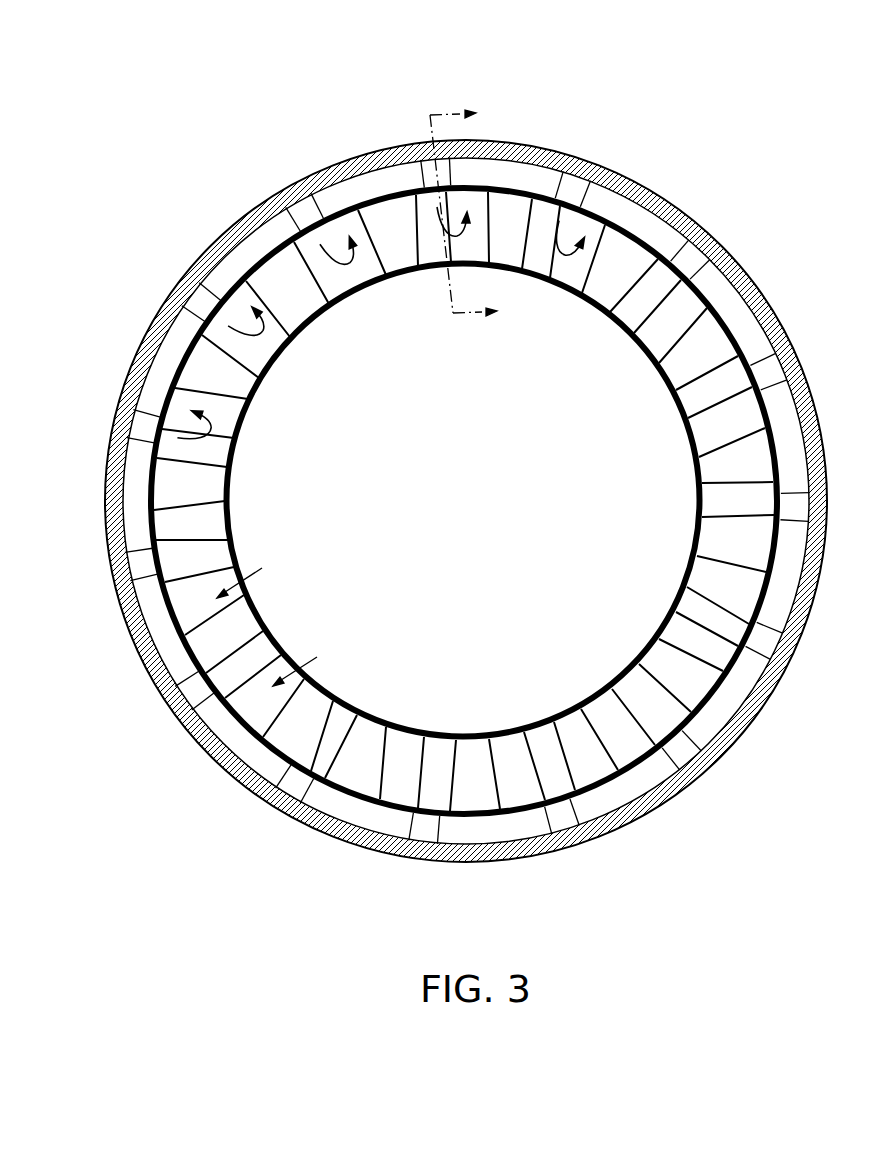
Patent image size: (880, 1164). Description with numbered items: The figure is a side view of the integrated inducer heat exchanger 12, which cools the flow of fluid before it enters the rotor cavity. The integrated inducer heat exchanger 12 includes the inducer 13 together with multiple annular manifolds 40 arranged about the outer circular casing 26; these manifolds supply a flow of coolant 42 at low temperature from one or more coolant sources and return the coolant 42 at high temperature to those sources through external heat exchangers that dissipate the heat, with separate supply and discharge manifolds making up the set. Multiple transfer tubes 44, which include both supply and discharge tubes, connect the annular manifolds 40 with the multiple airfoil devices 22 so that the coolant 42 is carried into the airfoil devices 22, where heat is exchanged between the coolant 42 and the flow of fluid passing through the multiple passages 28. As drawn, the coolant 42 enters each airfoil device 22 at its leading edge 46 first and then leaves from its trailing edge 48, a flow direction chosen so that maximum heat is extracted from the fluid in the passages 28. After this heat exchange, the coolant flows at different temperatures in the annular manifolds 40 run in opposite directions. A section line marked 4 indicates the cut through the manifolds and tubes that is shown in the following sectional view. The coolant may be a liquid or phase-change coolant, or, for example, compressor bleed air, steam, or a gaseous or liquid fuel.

The integrated inducer heat exchanger 12 is at (724, 78).
The section line 4- 4 is at (473, 212).
The inducer 13 is at (387, 711).
The airfoil devices 22 is at (213, 638).
The outer circular casing 26 is at (263, 256).
The passages 28 is at (283, 621).
The annular manifolds 40 is at (113, 486).
The flow of coolant 42 is at (666, 315).
The transfer tubes 44 is at (197, 308).
The leading edge 46 is at (224, 454).
The trailing edge 48 is at (231, 421).